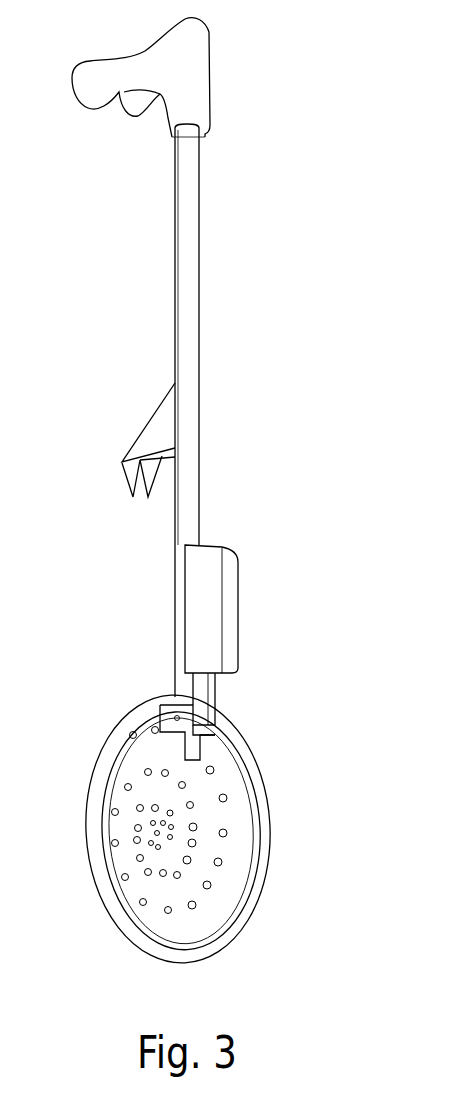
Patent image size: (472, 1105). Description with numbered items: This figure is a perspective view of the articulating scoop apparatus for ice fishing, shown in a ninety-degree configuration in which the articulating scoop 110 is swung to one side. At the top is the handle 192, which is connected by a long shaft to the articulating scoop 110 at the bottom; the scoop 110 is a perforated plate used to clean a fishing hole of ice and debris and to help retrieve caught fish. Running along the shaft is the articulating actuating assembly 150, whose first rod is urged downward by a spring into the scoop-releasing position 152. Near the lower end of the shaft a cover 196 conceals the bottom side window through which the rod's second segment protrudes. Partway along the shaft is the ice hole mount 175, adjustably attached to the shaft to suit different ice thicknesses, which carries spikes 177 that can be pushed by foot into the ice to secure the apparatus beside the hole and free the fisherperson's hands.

The handle 192 is at (185, 80).
The articulating actuating assembly 150 is at (183, 402).
The ice hole mount 175 is at (142, 428).
The spikes 177 is at (128, 485).
The cover 196 is at (230, 620).
The scoop-releasing position 152 is at (88, 903).
The articulating scoop 110 is at (188, 823).